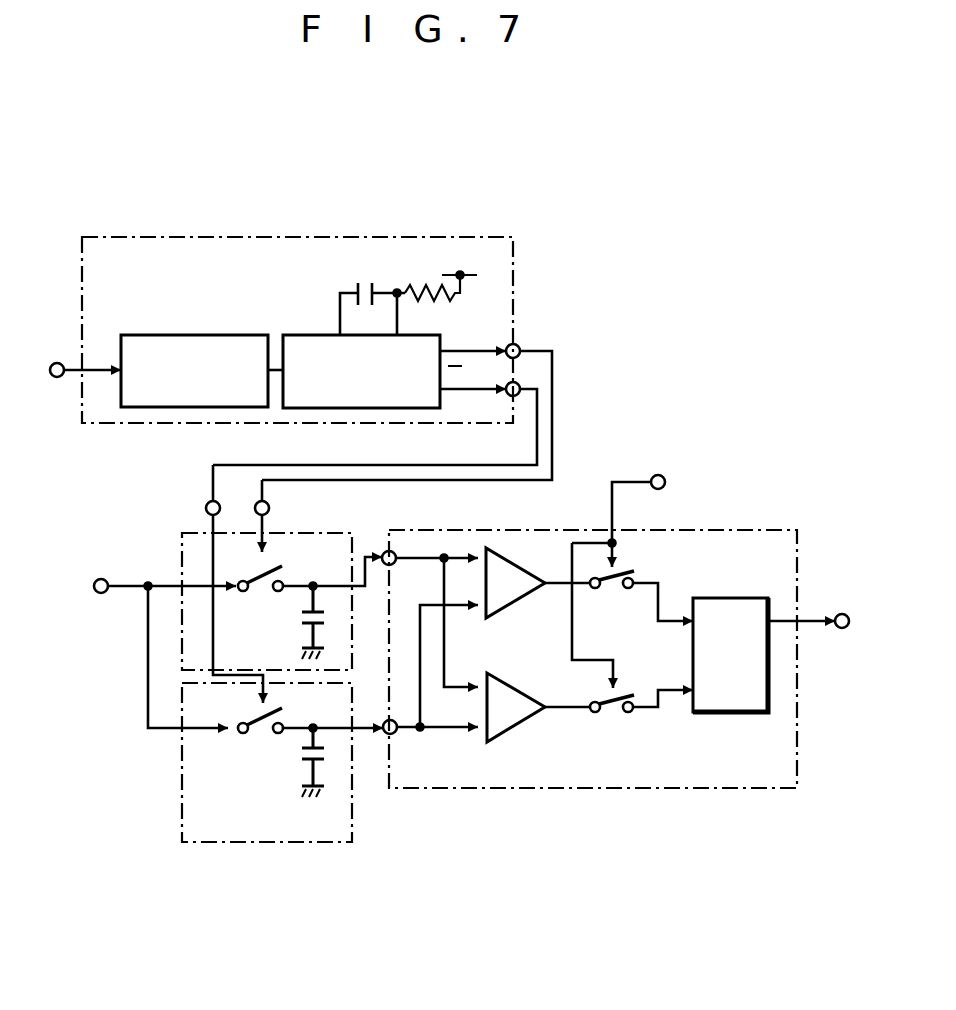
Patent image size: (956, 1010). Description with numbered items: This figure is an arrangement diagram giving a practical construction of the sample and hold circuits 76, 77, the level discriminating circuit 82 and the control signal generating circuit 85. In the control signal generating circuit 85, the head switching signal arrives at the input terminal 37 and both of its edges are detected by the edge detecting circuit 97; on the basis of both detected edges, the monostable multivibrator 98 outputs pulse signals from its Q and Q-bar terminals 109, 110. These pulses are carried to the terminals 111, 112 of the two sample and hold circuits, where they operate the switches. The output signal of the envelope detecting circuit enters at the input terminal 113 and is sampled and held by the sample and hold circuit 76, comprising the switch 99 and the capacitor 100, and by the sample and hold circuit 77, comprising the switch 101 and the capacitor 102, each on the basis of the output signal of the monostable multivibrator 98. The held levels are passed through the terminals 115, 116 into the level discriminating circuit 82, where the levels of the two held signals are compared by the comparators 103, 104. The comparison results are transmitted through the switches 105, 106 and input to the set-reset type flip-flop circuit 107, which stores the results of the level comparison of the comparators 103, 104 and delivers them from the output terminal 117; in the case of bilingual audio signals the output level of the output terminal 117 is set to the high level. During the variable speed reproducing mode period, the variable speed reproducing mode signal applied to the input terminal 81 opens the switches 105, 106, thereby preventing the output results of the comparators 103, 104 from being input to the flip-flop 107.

The control signal generating circuit 85 is at (115, 237).
The input terminal 37 is at (53, 363).
The edge detecting circuit 97 is at (148, 335).
The monostable multivibrator 98 is at (312, 335).
The Q output terminal 109 is at (518, 345).
The inverted Q output terminal 110 is at (520, 386).
The control terminal 111 is at (206, 505).
The control terminal 112 is at (269, 507).
The input terminal 113 is at (98, 578).
The sample and hold circuit 76 is at (182, 657).
The switch 99 is at (283, 580).
The capacitor 100 is at (302, 624).
The sample and hold circuit 77 is at (182, 818).
The switch 101 is at (260, 740).
The capacitor 102 is at (298, 760).
The level discriminating circuit 82 is at (622, 790).
The input terminal 115 is at (385, 551).
The input terminal 116 is at (386, 735).
The comparator 103 is at (510, 600).
The comparator 104 is at (515, 717).
The input terminal 81 is at (665, 482).
The switch 105 is at (612, 590).
The switch 106 is at (612, 716).
The set-reset type flip-flop circuit 107 is at (745, 713).
The output terminal 117 is at (843, 630).